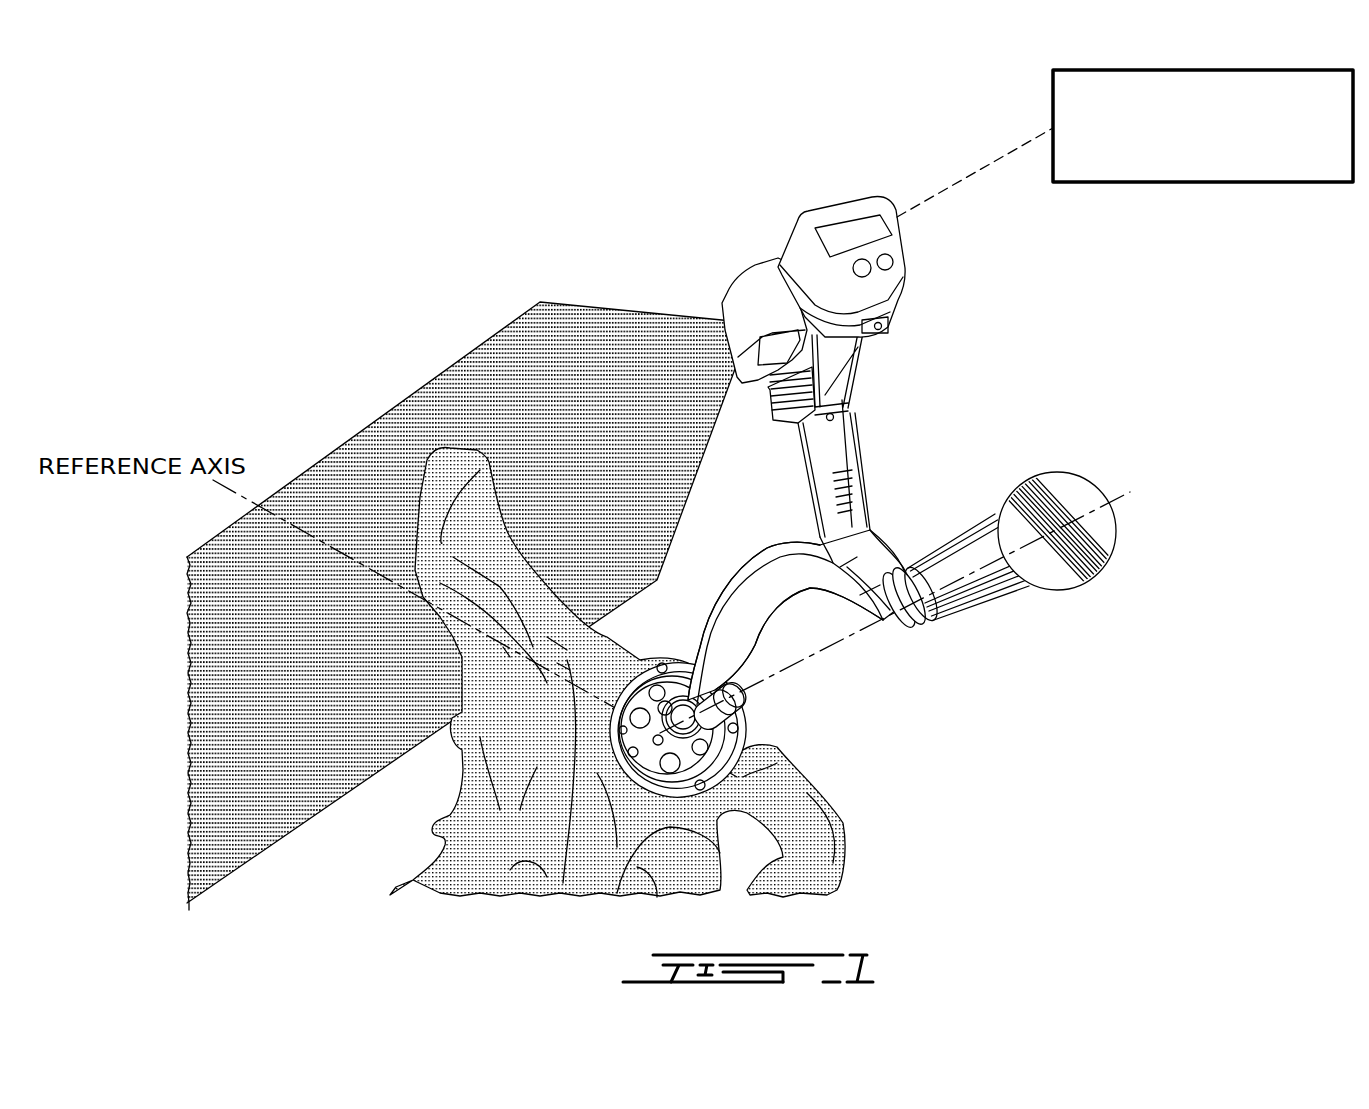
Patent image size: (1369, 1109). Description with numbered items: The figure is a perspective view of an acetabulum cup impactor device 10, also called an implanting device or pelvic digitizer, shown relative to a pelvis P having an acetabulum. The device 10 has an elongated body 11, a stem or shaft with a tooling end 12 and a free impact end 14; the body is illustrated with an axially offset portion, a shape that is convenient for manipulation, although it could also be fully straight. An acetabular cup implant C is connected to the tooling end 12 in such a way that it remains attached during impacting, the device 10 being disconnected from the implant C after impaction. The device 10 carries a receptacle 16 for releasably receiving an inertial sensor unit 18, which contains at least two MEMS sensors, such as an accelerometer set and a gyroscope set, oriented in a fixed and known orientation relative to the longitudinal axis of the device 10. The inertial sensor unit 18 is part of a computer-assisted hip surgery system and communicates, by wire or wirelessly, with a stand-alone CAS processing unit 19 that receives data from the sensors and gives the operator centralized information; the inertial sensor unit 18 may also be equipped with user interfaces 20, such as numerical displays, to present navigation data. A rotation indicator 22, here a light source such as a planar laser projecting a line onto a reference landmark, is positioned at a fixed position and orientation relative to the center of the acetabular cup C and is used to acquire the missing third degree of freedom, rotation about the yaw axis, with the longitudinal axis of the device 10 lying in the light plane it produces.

The acetabulum cup impactor device 10 is at (978, 466).
The elongated body 11 is at (773, 540).
The tooling end 12 is at (690, 682).
The impact end 14 is at (1052, 490).
The receptacle 16 is at (882, 330).
The inertial sensor unit 18 is at (882, 238).
The CAS processing unit 19 is at (1200, 183).
The user interfaces 20 is at (897, 232).
The rotation indicator 22 is at (745, 270).
The acetabular cup implant C is at (768, 772).
The pelvis P is at (467, 883).